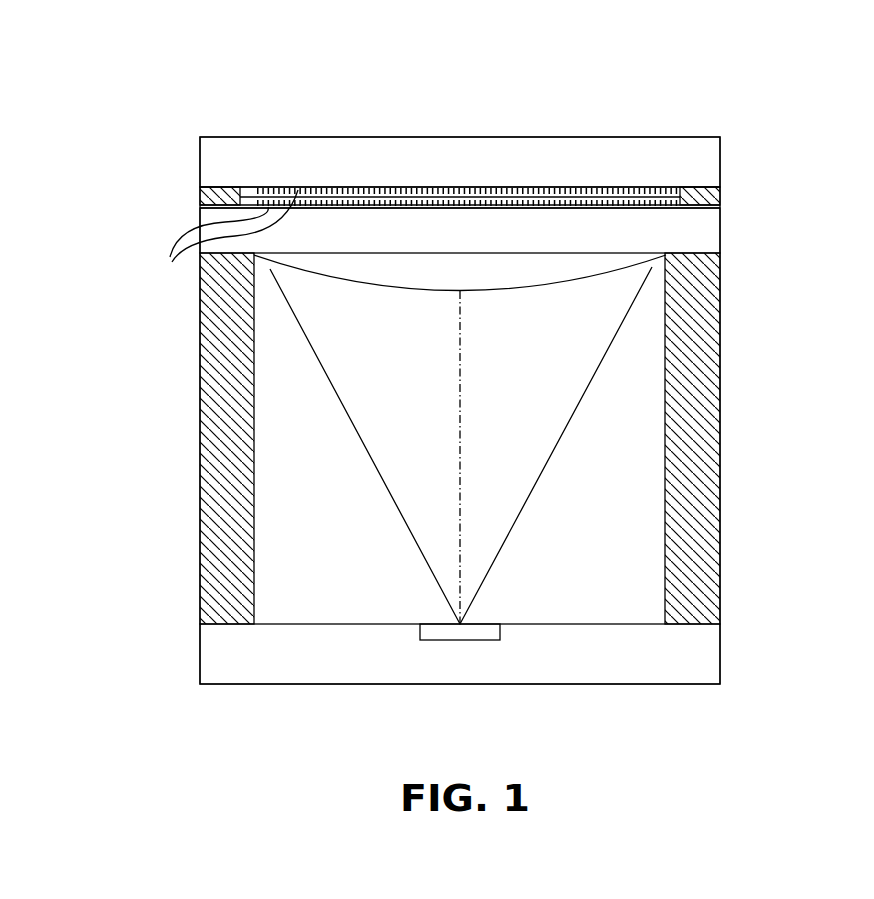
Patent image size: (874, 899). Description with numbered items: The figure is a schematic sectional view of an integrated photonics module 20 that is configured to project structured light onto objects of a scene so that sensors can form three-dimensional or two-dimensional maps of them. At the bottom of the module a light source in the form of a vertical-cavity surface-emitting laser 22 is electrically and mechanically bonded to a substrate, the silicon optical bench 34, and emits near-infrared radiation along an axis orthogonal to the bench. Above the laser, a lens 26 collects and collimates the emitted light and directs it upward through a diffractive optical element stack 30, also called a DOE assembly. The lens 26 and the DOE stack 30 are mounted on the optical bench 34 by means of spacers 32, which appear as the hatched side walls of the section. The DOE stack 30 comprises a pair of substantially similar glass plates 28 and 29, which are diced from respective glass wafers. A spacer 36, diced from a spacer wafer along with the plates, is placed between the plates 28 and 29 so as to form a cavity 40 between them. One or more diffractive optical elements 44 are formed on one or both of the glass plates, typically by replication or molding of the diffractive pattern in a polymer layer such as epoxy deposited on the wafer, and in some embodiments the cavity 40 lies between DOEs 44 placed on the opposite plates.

The integrated photonics module 20 is at (787, 88).
The vertical-cavity surface-emitting laser 22 is at (490, 632).
The lens 26 is at (538, 291).
The glass plate 28 is at (720, 227).
The glass plate 29 is at (720, 153).
The DOE stack 30 is at (121, 137).
The spacers 32 is at (200, 472).
The silicon optical bench 34 is at (720, 650).
The spacer 36 is at (200, 200).
The cavity 40 is at (673, 197).
The diffractive optical elements 44 is at (228, 240).